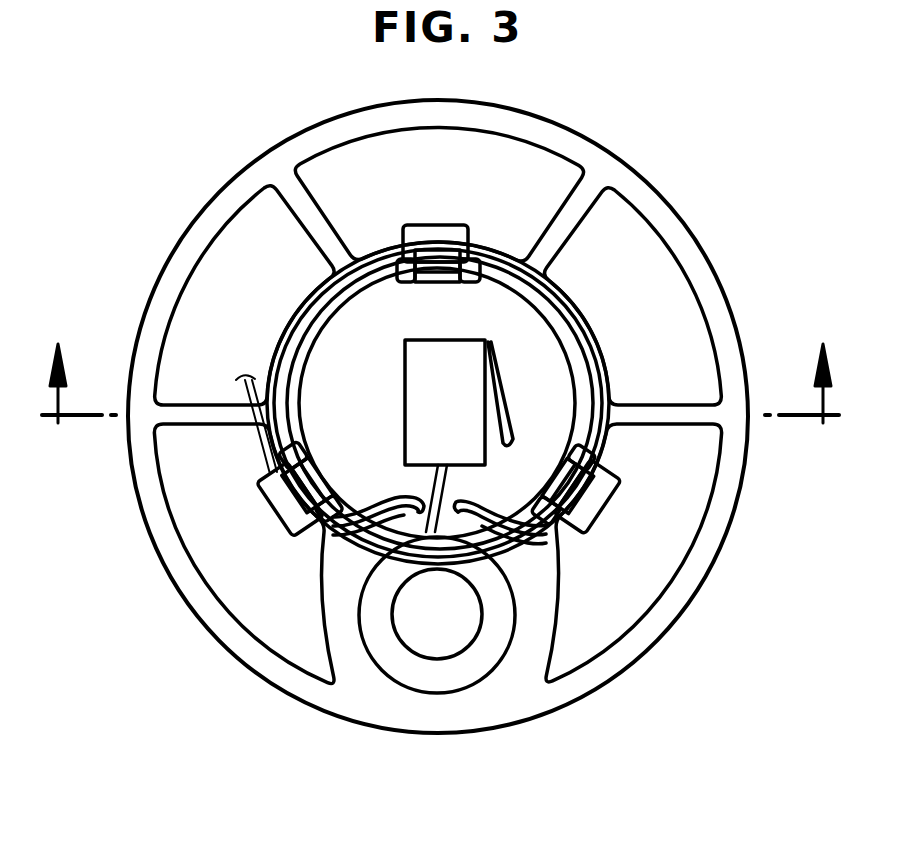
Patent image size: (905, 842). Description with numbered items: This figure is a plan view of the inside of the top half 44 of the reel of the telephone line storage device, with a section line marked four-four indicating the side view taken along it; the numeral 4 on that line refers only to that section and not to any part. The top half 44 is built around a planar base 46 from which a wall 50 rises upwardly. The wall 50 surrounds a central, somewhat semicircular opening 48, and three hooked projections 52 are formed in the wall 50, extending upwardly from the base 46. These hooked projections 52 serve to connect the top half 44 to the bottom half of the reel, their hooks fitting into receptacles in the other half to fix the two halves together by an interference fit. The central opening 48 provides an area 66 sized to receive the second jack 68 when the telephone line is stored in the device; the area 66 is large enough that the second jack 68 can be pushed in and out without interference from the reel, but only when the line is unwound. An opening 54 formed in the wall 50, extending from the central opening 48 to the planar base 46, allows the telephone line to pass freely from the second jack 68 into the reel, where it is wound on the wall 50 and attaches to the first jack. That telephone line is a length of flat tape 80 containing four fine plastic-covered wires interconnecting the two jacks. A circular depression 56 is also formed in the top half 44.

The top half of the reel 44 is at (180, 180).
The planar base 46 is at (640, 582).
The central opening 48 is at (547, 331).
The wall 50 is at (578, 403).
The hooked projections 52 is at (436, 263).
The opening in the wall 54 is at (463, 500).
The circular depression 56 is at (398, 666).
The area 66 is at (530, 357).
The second jack 68 is at (425, 358).
The flat tape 80 is at (257, 377).
The section line 4- 4 is at (440, 383).